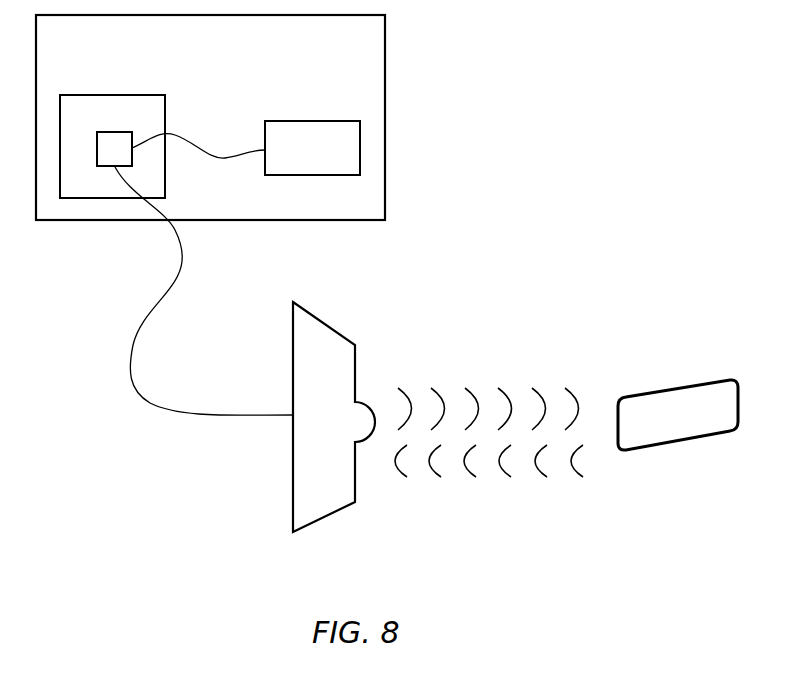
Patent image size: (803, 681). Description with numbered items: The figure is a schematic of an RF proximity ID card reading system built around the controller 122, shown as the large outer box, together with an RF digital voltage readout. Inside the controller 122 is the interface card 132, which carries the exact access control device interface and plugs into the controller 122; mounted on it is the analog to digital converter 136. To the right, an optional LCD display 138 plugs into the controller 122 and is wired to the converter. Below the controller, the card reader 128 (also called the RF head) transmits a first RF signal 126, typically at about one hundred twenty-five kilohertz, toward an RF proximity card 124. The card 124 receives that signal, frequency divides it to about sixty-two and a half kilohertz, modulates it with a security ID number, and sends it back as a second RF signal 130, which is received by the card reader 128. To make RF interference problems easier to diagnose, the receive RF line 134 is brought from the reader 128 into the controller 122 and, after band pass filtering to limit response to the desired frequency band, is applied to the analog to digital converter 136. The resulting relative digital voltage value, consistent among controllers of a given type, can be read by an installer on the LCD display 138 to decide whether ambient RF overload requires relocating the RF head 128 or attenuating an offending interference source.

The controller 122 is at (387, 88).
The RF proximity card 124 is at (680, 387).
The first RF signal 126 is at (488, 387).
The card reader 128 is at (318, 522).
The second RF signal 130 is at (488, 480).
The interface card 132 is at (167, 117).
The receive RF line 134 is at (182, 269).
The analog to digital converter 136 is at (115, 131).
The LCD display 138 is at (335, 120).